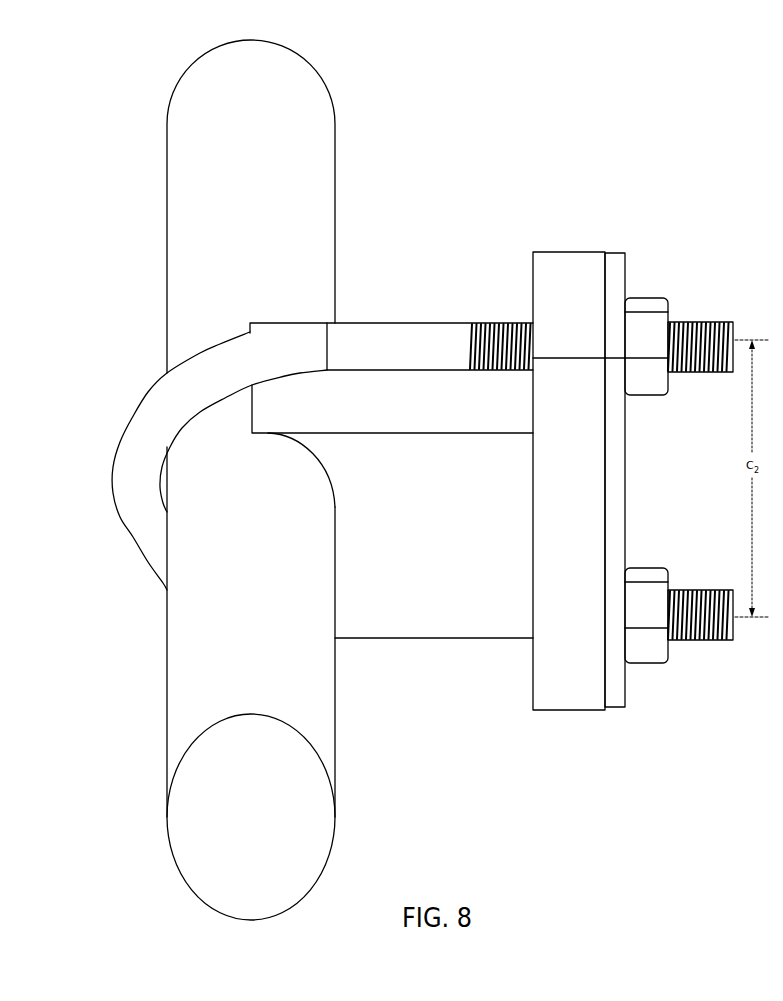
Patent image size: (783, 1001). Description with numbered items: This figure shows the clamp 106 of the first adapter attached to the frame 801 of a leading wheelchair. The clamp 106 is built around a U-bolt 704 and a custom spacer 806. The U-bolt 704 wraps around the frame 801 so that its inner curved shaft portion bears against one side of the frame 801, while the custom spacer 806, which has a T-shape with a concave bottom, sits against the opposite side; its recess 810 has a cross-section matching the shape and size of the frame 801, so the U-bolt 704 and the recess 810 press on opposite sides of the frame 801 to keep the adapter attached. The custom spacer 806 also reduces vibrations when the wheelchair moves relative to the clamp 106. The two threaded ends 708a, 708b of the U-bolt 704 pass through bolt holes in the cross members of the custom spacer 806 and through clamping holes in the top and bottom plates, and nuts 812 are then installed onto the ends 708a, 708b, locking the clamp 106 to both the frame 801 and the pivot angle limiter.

The clamp 106 is at (397, 465).
The U-bolt 704 is at (145, 418).
The first end of the U-bolt 708a is at (735, 330).
The second end of the U-bolt 708b is at (735, 630).
The frame 801 is at (263, 840).
The custom spacer 806 is at (475, 608).
The recess 810 is at (322, 501).
The nuts 812 is at (640, 298).